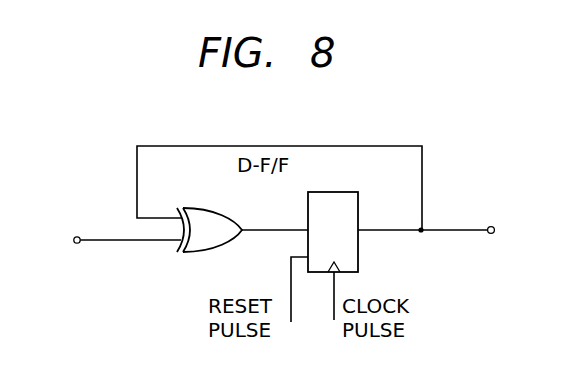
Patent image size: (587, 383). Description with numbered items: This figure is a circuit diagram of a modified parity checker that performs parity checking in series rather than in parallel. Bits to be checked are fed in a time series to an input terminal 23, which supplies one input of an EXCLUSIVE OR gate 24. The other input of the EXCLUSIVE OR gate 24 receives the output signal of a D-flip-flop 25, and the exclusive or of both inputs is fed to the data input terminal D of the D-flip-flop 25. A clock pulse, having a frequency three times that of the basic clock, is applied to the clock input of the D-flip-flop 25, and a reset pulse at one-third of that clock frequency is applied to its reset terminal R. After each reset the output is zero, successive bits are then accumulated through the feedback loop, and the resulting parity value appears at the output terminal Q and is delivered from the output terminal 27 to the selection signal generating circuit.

The input terminal 23 is at (76, 237).
The EXCLUSIVE OR gate 24 is at (204, 207).
The D-flip-flop 25 is at (348, 192).
The output terminal 27 is at (492, 226).